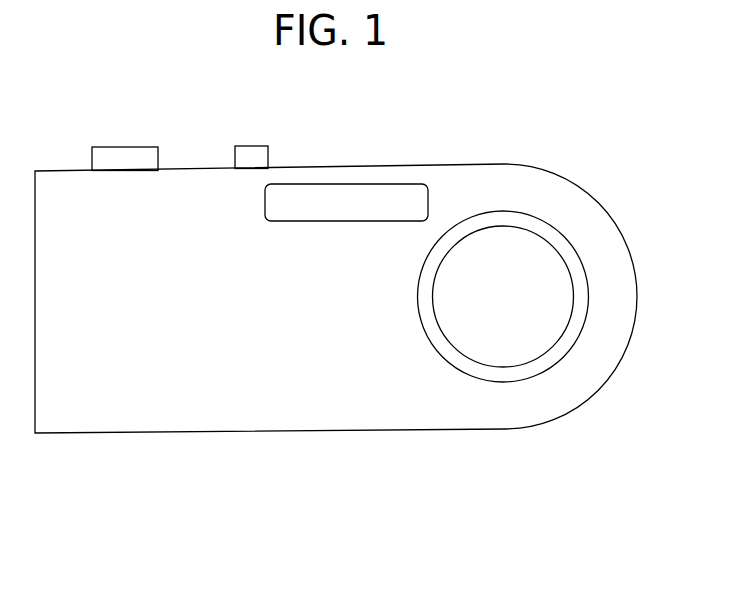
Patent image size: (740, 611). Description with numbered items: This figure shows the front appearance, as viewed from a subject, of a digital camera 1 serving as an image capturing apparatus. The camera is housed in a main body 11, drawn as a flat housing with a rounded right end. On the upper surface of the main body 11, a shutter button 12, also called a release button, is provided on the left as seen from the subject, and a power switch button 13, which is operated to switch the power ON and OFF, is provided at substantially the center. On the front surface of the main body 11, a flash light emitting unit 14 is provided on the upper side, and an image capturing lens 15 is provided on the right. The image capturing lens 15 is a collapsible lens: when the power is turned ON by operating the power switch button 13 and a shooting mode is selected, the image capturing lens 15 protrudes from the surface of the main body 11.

The digital camera 1 is at (529, 473).
The main body 11 is at (248, 410).
The shutter button 12 is at (127, 147).
The power switch button 13 is at (253, 146).
The flash light emitting unit 14 is at (354, 184).
The image capturing lens 15 is at (588, 283).